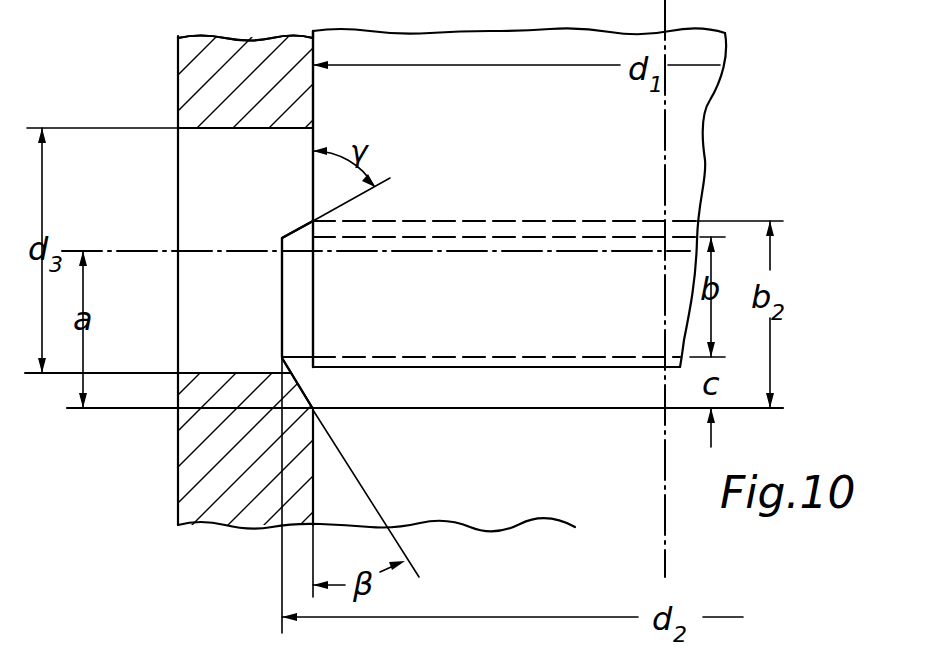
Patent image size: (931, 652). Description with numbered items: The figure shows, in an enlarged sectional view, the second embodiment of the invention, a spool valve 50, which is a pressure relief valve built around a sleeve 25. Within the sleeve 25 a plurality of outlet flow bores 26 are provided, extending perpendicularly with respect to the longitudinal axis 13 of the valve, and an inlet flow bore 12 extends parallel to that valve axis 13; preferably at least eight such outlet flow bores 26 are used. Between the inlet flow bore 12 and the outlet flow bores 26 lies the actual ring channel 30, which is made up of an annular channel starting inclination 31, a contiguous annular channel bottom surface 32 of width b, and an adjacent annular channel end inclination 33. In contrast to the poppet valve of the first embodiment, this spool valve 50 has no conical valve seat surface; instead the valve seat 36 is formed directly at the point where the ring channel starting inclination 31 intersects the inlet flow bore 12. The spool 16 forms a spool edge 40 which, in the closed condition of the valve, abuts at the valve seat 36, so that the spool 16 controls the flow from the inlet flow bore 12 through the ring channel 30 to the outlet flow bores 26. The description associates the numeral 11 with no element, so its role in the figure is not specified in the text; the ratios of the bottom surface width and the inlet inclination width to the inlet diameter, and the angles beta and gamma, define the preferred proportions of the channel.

The axis 11 is at (193, 345).
The inlet flow bore 12 is at (318, 520).
The longitudinal axis 13 is at (668, 573).
The spool 16 is at (333, 96).
The sleeve 25 is at (195, 68).
The outlet flow bores 26 is at (205, 130).
The annular channel 30 is at (285, 318).
The annular channel starting inclination 31 is at (303, 390).
The annular channel bottom surface 32 is at (280, 273).
The annular channel end inclination 33 is at (310, 222).
The valve seat 36 is at (315, 408).
The spool edge 40 is at (320, 366).
The spool valve 50 is at (732, 151).